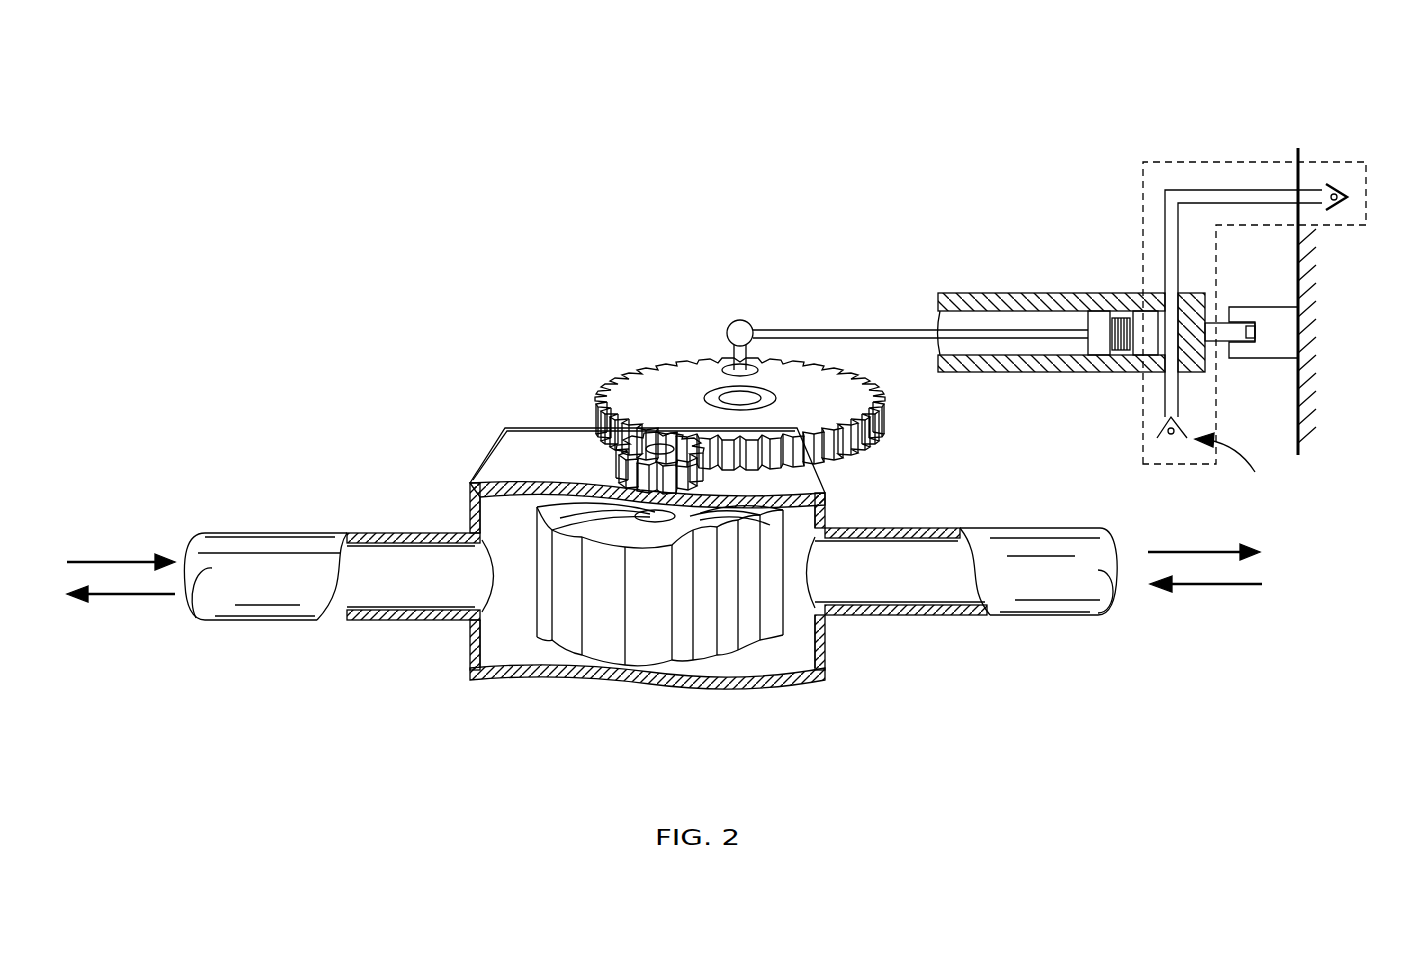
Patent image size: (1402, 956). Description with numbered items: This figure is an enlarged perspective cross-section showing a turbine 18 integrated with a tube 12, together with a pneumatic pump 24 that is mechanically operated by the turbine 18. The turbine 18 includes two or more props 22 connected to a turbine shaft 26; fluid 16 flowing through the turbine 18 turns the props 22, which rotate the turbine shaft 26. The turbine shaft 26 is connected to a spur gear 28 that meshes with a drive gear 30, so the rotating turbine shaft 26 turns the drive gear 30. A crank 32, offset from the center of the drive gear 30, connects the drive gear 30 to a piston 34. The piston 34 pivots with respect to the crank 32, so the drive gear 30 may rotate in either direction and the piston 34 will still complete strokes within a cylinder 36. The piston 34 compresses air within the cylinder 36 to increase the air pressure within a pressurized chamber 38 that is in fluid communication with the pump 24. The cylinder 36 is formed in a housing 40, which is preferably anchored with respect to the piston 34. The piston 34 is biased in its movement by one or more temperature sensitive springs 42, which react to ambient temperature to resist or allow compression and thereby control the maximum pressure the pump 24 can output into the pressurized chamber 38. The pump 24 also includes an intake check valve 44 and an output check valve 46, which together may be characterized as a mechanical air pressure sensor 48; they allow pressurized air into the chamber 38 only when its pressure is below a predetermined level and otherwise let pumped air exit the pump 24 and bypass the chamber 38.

The tube 12 is at (256, 530).
The fluid 16 is at (378, 587).
The turbine 18 is at (523, 412).
The props 22 is at (658, 609).
The pneumatic pump 24 is at (1095, 182).
The turbine shaft 26 is at (698, 470).
The spur gear 28 is at (615, 450).
The drive gear 30 is at (855, 395).
The crank 32 is at (726, 339).
The piston 34 is at (1100, 312).
The cylinder 36 is at (1140, 356).
The pressurized chamber 38 is at (1166, 505).
The housing 40 is at (980, 292).
The temperature sensitive springs 42 is at (1118, 350).
The intake check valve 44 is at (1340, 172).
The output check valve 46 is at (1234, 463).
The mechanical air pressure sensor 48 is at (1366, 220).